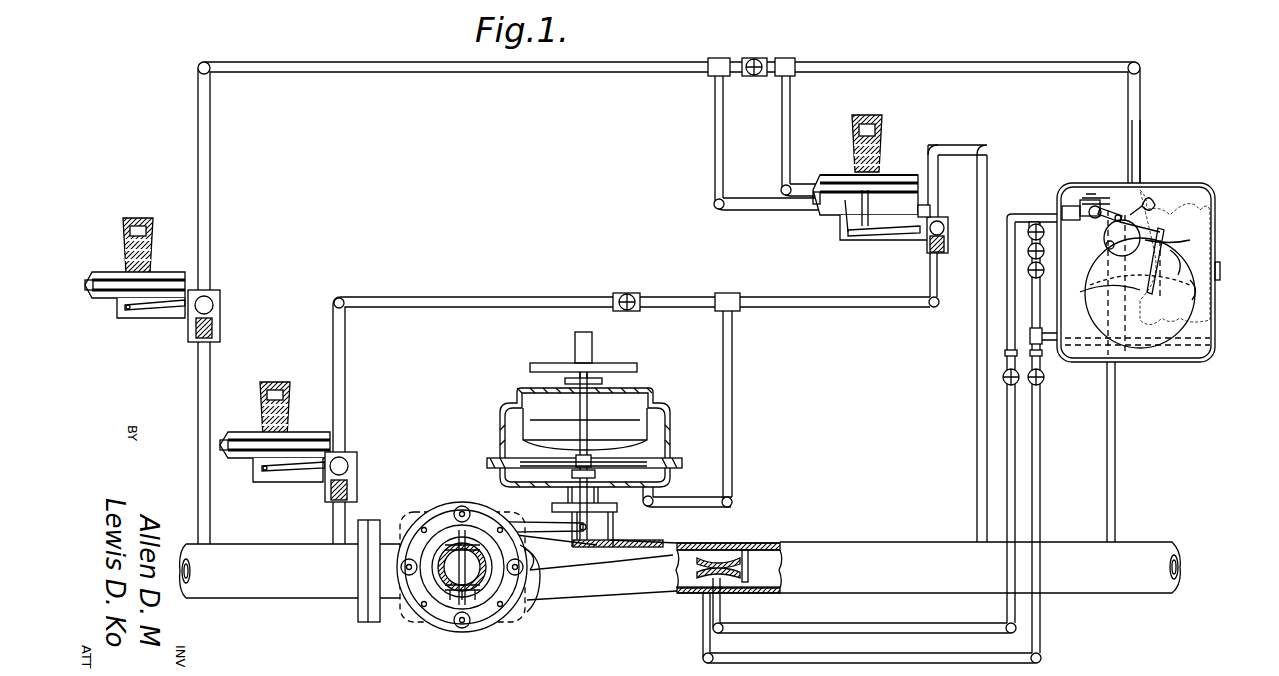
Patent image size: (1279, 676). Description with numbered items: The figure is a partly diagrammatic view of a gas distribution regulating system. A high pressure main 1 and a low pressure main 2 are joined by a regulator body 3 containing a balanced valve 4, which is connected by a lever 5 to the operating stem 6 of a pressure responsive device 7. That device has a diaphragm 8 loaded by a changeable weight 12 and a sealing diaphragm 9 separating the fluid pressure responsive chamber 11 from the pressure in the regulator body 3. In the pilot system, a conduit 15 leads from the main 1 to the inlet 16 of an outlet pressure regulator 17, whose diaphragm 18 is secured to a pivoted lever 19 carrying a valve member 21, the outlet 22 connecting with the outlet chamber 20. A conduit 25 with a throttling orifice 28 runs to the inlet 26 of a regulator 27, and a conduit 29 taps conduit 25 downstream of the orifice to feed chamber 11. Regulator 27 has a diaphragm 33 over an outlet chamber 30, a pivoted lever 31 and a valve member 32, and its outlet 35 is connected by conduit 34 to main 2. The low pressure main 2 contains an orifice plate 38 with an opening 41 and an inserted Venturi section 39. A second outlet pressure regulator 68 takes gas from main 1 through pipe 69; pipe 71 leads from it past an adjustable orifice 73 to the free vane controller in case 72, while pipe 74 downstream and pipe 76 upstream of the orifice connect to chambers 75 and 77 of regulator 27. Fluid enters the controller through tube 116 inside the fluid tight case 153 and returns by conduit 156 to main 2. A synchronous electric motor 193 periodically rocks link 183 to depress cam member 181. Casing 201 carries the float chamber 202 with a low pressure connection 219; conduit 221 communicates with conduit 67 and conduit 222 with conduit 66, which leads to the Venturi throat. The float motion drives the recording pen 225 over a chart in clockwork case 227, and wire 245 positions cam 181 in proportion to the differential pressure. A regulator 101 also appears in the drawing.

The high pressure main 1 is at (292, 578).
The low pressure main 2 is at (884, 546).
The regulator body 3 is at (622, 594).
The valve 4 is at (468, 598).
The lever 5 is at (562, 530).
The operating stem 6 is at (590, 432).
The pressure responsive device 7 is at (500, 424).
The diaphragm 8 is at (666, 446).
The sealing diaphragm 9 is at (504, 486).
The fluid pressure responsive chamber 11 is at (660, 490).
The weight 12 is at (610, 368).
The conduit 15 is at (335, 520).
The inlet 16 is at (358, 490).
The outlet pressure regulator 17 is at (275, 478).
The diaphragm 18 is at (302, 434).
The pivoted lever 19 is at (302, 480).
The outlet chamber 20 is at (254, 472).
The valve member 21 is at (350, 462).
The outlet 22 is at (345, 448).
The conduit 25 is at (631, 354).
The inlet 26 is at (922, 248).
The regulator 27 is at (834, 233).
The throttling orifice 28 is at (628, 294).
The conduit 29 is at (734, 398).
The outlet chamber 30 is at (852, 240).
The pivoted lever 31 is at (879, 240).
The valve member 32 is at (946, 232).
The diaphragm 33 is at (917, 178).
The conduit 34 is at (976, 352).
The outlet 35 is at (938, 212).
The orifice plate 38 is at (766, 544).
The inserted Venturi section 39 is at (721, 562).
The opening 41 is at (757, 594).
The conduit 66 is at (1006, 420).
The conduit 67 is at (1040, 486).
The outlet pressure regulator 68 is at (143, 318).
The pipe 69 is at (197, 358).
The pipe 71 is at (212, 180).
The case 72 is at (1141, 182).
The adjustable valve or orifice 73 is at (755, 58).
The pipe 74 is at (790, 128).
The chamber 75 is at (830, 176).
The pipe 76 is at (714, 122).
The chamber 77 is at (820, 216).
The pressure regulator 101 is at (884, 160).
The tube 116 is at (1118, 204).
The case 153 is at (1124, 256).
The conduit 156 is at (1120, 396).
The cam member 181 is at (1104, 238).
The link 183 is at (1094, 200).
The synchronous electric motor 193 is at (1076, 207).
The casing 201 is at (1202, 188).
The float chamber 202 is at (1205, 332).
The low pressure connection 219 is at (1150, 196).
The conduit 221 is at (1078, 350).
The conduit 222 is at (1030, 222).
The recording pen 225 is at (1196, 300).
The case 227 is at (1102, 290).
The wire 245 is at (1155, 233).